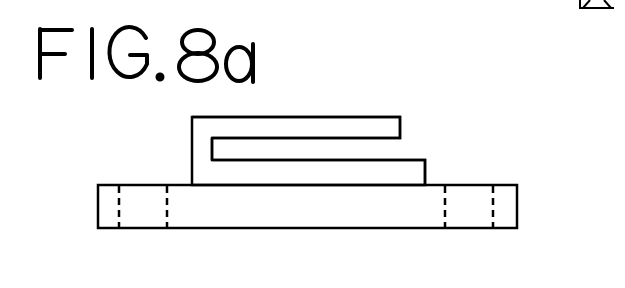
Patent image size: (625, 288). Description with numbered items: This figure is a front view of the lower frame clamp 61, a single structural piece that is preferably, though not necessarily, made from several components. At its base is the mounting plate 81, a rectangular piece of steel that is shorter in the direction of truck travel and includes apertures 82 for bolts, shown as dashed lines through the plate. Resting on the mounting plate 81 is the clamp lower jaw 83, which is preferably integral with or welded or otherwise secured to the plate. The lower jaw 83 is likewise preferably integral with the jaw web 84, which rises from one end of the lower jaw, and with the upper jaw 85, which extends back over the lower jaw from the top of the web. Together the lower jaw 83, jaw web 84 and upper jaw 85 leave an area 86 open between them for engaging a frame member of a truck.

The lower frame clamp 61 is at (528, 143).
The mounting plate 81 is at (415, 229).
The apertures 82 is at (473, 217).
The clamp lower jaw 83 is at (418, 160).
The jaw web 84 is at (192, 149).
The upper jaw 85 is at (342, 117).
The open area 86 is at (385, 148).